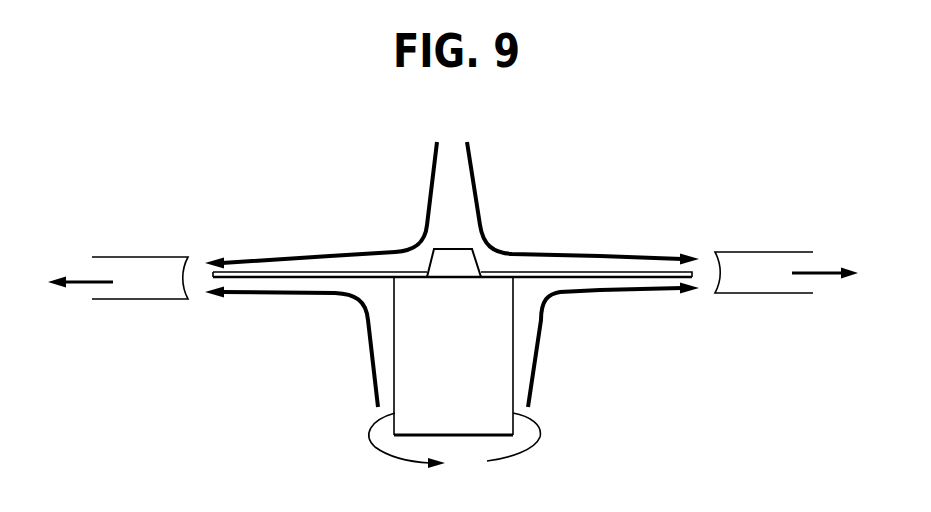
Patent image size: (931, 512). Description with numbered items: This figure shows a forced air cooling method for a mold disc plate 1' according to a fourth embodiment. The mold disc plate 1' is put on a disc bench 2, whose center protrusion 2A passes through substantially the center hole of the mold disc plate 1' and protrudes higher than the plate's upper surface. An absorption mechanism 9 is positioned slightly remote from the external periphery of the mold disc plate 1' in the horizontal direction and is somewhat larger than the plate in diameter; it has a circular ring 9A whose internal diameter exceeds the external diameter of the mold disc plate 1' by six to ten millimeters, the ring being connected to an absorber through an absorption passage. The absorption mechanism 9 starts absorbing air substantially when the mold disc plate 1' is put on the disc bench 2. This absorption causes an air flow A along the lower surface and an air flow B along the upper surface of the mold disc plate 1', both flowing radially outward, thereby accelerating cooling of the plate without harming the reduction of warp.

The absorption mechanism 9 is at (786, 211).
The circular ring 9A is at (750, 262).
The air flow B is at (430, 192).
The air flow A is at (372, 348).
The mold disc plate 1' is at (452, 318).
The center protrusion 2A is at (460, 255).
The disc bench 2 is at (495, 363).